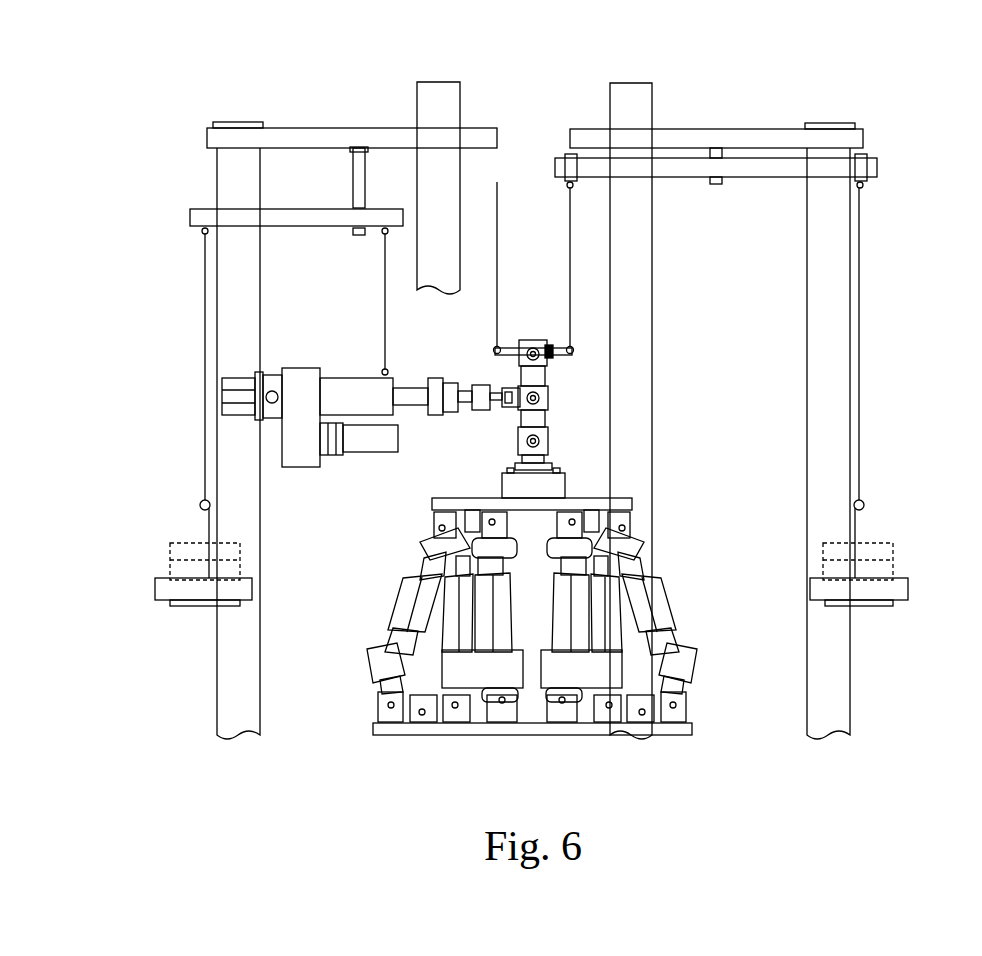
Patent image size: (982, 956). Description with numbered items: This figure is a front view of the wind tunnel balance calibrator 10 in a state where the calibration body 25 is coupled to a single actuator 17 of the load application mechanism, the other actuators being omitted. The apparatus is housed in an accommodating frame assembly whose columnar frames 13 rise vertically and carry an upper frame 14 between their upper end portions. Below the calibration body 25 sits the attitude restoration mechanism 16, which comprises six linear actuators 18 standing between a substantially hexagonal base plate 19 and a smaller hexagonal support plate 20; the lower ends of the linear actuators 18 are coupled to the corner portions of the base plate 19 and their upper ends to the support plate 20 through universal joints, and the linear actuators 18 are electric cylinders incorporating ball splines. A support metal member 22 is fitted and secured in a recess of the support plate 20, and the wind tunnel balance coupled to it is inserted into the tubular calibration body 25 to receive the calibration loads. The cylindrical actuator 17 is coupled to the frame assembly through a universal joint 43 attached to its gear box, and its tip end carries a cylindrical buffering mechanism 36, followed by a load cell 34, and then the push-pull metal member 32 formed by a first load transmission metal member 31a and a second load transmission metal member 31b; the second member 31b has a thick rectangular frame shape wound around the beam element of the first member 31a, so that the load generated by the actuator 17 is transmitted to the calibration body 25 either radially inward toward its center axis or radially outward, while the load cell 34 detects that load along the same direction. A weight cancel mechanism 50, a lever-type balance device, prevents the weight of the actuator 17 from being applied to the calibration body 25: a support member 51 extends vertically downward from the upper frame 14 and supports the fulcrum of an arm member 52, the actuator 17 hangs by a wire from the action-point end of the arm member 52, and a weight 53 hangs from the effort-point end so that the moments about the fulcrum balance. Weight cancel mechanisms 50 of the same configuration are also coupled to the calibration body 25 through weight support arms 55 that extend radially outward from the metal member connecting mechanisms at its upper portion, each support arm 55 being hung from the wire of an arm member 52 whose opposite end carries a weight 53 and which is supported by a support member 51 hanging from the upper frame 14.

The wind tunnel balance calibrator 10 is at (128, 93).
The columnar frames 13 is at (222, 295).
The upper frame 14 is at (316, 128).
The attitude restoration mechanism 16 is at (562, 621).
The actuator 17 is at (371, 396).
The linear actuators 18 is at (405, 590).
The base plate 19 is at (640, 736).
The support plate 20 is at (632, 502).
The support metal member 22 is at (568, 485).
The calibration body 25 is at (541, 370).
The first load transmission metal member 31a is at (506, 405).
The second load transmission metal member 31b is at (502, 403).
The push-pull metal member 32 is at (441, 437).
The load cell 34 is at (478, 385).
The buffering mechanism 36 is at (440, 378).
The universal joint 43 is at (270, 375).
The weight cancel mechanism 50 is at (537, 371).
The support member 51 is at (353, 180).
The arm member 52 is at (296, 226).
The weight 53 is at (167, 557).
The weight support arms 55 is at (505, 348).